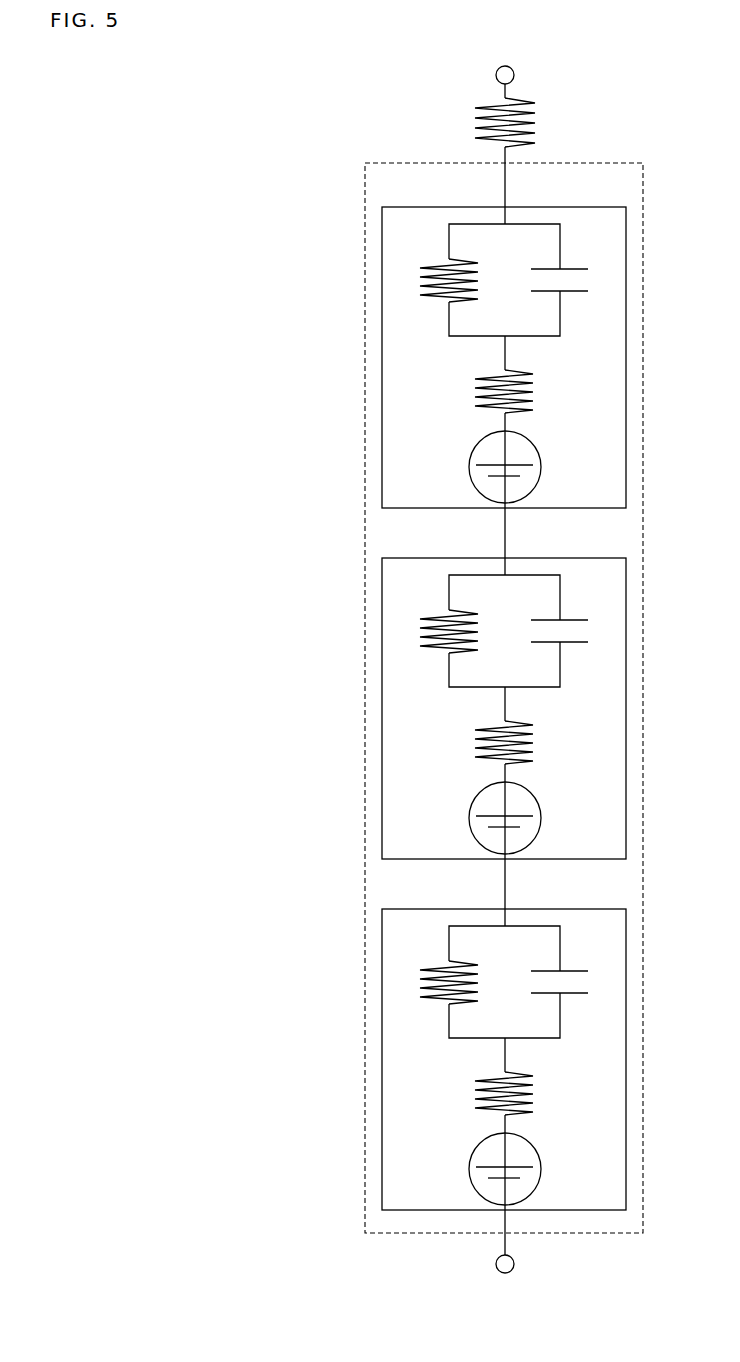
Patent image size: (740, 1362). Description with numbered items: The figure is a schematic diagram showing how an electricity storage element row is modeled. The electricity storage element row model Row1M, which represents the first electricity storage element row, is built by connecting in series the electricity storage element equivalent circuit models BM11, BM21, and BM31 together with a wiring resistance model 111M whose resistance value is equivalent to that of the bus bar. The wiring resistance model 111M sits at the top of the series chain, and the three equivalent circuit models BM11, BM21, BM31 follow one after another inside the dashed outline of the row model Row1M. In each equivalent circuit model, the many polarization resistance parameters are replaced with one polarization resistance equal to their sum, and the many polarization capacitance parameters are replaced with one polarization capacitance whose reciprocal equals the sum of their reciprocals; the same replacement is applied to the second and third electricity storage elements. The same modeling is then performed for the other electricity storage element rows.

The wiring resistance model 111M is at (477, 116).
The electricity storage element row model Row1M is at (366, 163).
The electricity storage element equivalent circuit model BM11 is at (583, 207).
The electricity storage element equivalent circuit model BM21 is at (509, 690).
The electricity storage element equivalent circuit model BM31 is at (509, 1041).